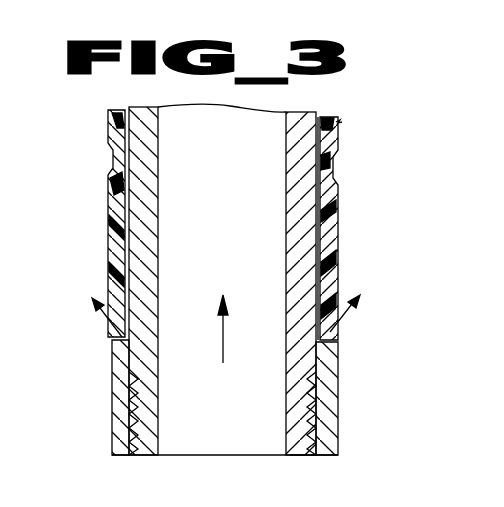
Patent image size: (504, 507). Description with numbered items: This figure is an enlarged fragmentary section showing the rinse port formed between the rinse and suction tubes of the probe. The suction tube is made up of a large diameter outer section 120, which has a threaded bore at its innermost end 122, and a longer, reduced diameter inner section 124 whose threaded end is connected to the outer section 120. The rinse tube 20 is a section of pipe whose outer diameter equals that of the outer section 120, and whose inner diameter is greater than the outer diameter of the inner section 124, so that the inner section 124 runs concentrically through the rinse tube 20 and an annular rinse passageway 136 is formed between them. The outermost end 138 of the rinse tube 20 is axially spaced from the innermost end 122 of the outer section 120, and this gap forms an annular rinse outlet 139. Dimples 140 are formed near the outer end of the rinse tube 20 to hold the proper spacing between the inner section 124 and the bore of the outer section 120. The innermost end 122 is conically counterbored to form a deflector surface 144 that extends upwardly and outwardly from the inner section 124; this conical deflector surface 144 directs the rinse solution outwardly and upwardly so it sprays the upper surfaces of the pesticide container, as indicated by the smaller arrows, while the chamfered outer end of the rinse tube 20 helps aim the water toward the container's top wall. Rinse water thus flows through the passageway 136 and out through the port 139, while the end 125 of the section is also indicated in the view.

The rinse tube 20 is at (338, 123).
The outer section of the suction tube 120 is at (118, 438).
The innermost end of the outer section 122 is at (326, 376).
The inner section of the suction tube 124 is at (316, 110).
The pipe end 125 is at (305, 450).
The annular rinse passageway 136 is at (322, 224).
The outermost end of the rinse tube 138 is at (330, 276).
The annular rinse outlet 139 is at (128, 341).
The dimples 140 is at (115, 158).
The deflector surface 144 is at (335, 395).